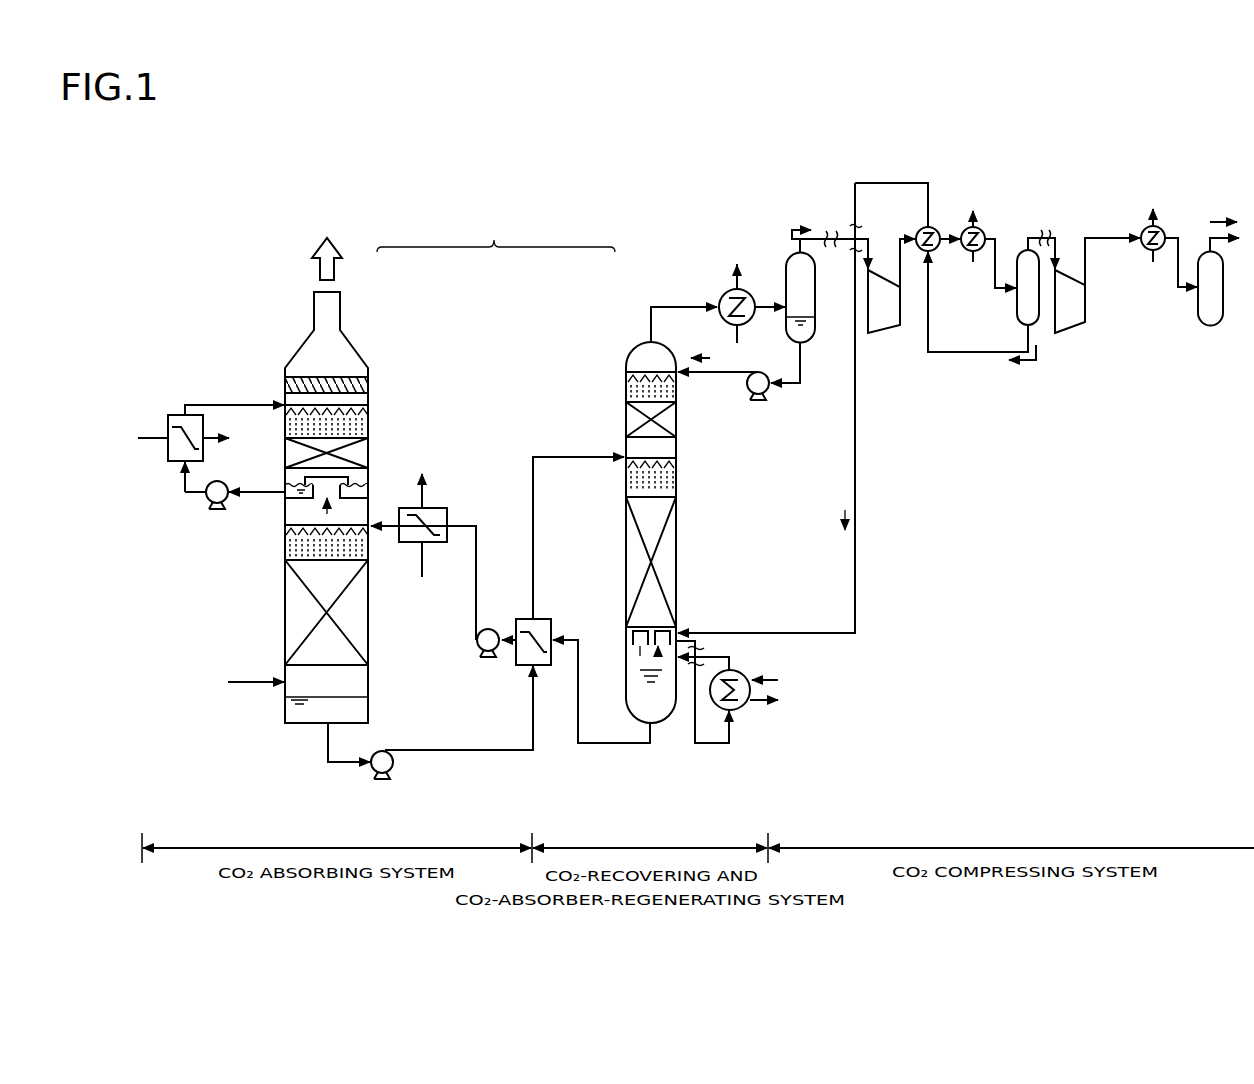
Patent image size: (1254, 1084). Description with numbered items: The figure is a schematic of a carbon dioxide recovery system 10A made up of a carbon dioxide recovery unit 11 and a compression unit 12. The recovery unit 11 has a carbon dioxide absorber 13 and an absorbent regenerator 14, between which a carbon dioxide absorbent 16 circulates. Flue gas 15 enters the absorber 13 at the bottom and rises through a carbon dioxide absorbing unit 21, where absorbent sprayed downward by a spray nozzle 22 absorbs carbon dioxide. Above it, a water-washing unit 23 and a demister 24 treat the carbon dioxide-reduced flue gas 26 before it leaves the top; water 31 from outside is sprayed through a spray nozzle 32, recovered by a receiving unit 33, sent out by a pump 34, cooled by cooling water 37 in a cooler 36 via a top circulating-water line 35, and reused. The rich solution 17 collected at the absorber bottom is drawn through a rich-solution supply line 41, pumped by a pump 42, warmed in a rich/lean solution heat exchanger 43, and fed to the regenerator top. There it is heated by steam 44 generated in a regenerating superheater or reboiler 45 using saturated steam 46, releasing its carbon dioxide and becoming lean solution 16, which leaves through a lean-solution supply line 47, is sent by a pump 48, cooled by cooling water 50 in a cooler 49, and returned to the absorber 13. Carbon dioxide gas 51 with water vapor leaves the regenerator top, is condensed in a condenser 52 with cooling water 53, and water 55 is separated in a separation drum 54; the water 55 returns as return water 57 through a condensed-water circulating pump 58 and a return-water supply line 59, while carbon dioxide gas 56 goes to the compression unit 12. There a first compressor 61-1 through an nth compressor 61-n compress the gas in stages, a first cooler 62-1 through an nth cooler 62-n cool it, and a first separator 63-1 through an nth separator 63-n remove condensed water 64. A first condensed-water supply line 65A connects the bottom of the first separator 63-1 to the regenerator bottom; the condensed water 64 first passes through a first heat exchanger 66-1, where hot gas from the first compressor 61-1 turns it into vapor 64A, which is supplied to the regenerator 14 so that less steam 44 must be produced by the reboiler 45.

The CO₂ recovery system 10A is at (584, 150).
The CO₂ recovery unit 11 is at (496, 223).
The compression unit 12 is at (900, 163).
The CO₂ absorber 13 is at (366, 349).
The absorbent regenerator 14 is at (618, 353).
The flue gas 15 is at (240, 680).
The CO₂ absorbent (lean solution) 16 is at (556, 770).
The rich solution 17 is at (363, 710).
The CO₂ absorbing unit 21 is at (290, 603).
The spray nozzle 22 is at (371, 530).
The water-washing unit 23 is at (283, 468).
The demister 24 is at (283, 390).
The CO₂-reduced flue gas 26 is at (320, 505).
The water 31 is at (228, 393).
The spray nozzle 32 is at (282, 414).
The receiving unit 33 is at (285, 505).
The pump 34 is at (205, 508).
The top circulating-water line 35 is at (192, 403).
The cooler 36 is at (172, 462).
The cooling water 37 is at (152, 436).
The rich-solution supply line 41 is at (478, 752).
The pump 42 is at (395, 762).
The rich/lean solution heat exchanger 43 is at (540, 619).
The steam 44 is at (630, 650).
The regenerating superheater (reboiler) 45 is at (738, 670).
The saturated steam 46 is at (785, 678).
The lean-solution supply line 47 is at (628, 745).
The pump 48 is at (486, 628).
The cooler 49 is at (432, 508).
The cooling water 50 is at (419, 572).
The CO₂ gas accompanied by water vapor 51 is at (661, 305).
The condenser 52 is at (721, 294).
The cooling water 53 is at (736, 311).
The separation drum 54 is at (786, 258).
The water 55 is at (805, 335).
The CO₂ gas 56 is at (1215, 218).
The return water 57 is at (693, 357).
The condensed-water circulating pump 58 is at (746, 392).
The return-water supply line 59 is at (784, 388).
The first compressor 61-1 is at (888, 335).
The nth compressor 61-n is at (1072, 335).
The first cooler 62-1 is at (972, 264).
The nth cooler 62-n is at (1150, 264).
The first separator 63-1 is at (1025, 250).
The nth separator 63-n is at (1210, 326).
The condensed water 64 is at (1022, 366).
The vapor 64A is at (840, 516).
The first condensed-water supply line 65A is at (858, 444).
The first heat exchanger 66-1 is at (936, 228).